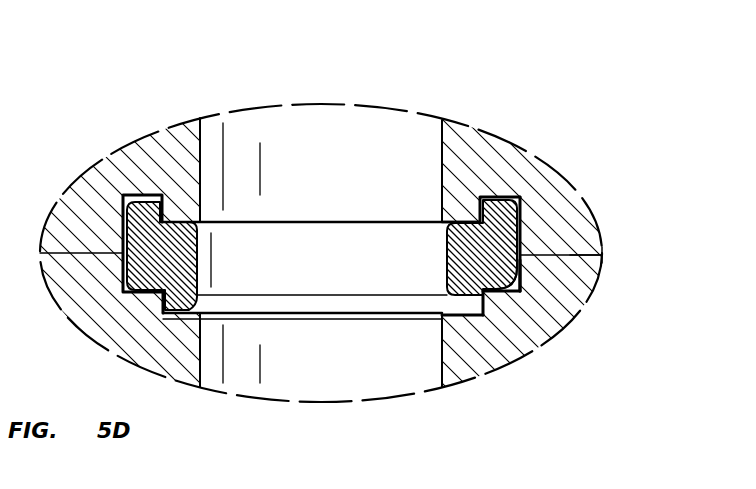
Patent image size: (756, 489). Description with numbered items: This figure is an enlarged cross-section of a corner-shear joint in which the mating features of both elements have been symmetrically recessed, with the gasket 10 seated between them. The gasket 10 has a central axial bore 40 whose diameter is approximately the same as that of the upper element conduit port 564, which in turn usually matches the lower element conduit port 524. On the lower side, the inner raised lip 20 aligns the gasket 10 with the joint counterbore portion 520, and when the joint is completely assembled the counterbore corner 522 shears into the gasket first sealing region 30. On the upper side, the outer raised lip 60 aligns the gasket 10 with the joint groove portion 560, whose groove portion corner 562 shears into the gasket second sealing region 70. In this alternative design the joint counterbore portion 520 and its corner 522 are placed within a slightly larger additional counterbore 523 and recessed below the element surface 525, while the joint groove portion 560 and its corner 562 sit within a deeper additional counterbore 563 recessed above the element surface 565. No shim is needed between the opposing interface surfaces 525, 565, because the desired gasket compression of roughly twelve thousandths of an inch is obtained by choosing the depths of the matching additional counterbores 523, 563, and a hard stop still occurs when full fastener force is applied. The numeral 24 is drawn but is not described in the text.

The gasket 10 is at (343, 275).
The inner raised lip 20 is at (461, 318).
The housing component 24 is at (68, 0).
The gasket first sealing region 30 is at (523, 278).
The gasket central axial bore 40 is at (395, 265).
The outer raised lip 60 is at (500, 197).
The gasket second sealing region 70 is at (478, 221).
The joint counterbore portion 520 is at (483, 295).
The counterbore corner 522 is at (485, 297).
The additional counterbore 523 is at (492, 264).
The lower element conduit port 524 is at (200, 358).
The element surface 525 is at (590, 262).
The joint groove portion 560 is at (520, 195).
The groove portion corner 562 is at (482, 219).
The additional counterbore 563 is at (523, 211).
The upper element conduit port 564 is at (202, 157).
The element surface 565 is at (545, 253).